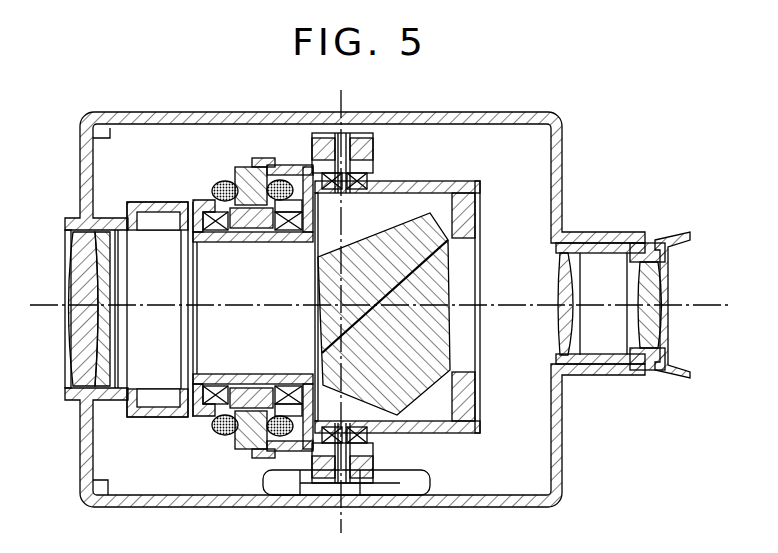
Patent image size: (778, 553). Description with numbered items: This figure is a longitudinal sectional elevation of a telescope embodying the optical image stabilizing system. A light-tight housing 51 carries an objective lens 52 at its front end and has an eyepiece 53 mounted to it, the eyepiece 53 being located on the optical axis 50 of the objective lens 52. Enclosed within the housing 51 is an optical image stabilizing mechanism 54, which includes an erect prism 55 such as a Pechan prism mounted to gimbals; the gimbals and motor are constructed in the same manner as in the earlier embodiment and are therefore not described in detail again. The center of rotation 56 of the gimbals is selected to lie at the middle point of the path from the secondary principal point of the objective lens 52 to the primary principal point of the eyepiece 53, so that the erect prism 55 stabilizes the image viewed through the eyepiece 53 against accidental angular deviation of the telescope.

The optical axis 50 is at (143, 312).
The light-tight housing 51 is at (488, 112).
The objective lens 52 is at (78, 350).
The eyepiece 53 is at (599, 233).
The optical image stabilizing mechanism 54 is at (403, 163).
The erect prism 55 is at (425, 398).
The center of rotation 56 is at (340, 299).